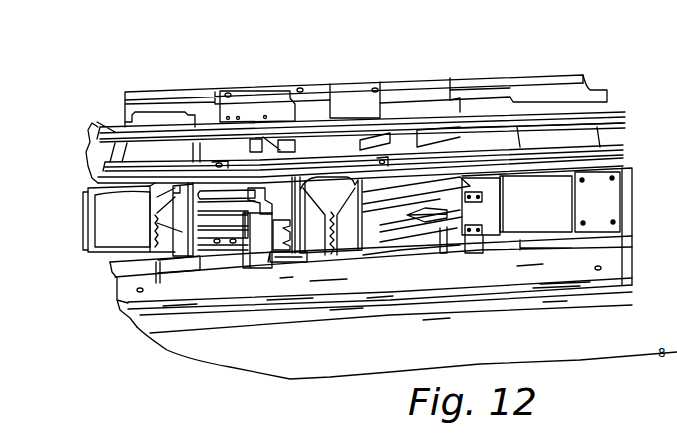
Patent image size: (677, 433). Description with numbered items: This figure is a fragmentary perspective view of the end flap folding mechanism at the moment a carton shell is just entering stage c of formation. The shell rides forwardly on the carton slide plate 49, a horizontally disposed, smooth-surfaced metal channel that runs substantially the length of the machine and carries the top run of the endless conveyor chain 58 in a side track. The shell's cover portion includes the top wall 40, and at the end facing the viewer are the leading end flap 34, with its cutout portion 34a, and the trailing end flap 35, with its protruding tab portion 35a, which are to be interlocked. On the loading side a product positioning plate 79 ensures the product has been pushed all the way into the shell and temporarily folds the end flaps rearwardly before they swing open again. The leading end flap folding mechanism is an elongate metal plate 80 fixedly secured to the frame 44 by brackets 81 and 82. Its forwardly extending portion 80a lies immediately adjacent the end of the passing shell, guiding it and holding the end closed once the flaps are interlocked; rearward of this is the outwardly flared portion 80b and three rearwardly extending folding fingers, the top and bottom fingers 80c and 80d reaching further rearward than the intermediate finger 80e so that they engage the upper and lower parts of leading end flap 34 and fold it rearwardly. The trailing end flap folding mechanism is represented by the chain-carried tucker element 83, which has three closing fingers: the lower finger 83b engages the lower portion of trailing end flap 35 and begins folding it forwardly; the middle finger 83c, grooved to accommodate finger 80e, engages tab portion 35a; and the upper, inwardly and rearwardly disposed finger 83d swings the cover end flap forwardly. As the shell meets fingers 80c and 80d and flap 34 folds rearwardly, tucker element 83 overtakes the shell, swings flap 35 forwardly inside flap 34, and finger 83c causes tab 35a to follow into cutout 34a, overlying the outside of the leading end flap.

The leading end flap 34 is at (183, 247).
The cutout portion 34a is at (175, 235).
The trailing end flap 35 is at (87, 253).
The tab portion 35a is at (66, 224).
The top wall 40 is at (355, 147).
The frame 44 is at (582, 345).
The carton slide plate 49 is at (217, 228).
The endless conveyor chain 58 is at (214, 240).
The product positioning plate 79 is at (147, 225).
The elongate metal plate 80 is at (457, 224).
The forwardly extending portion 80a is at (556, 209).
The rearwardly outwardly flared portion 80b is at (442, 230).
The top folding finger 80c is at (403, 200).
The bottom folding finger 80d is at (383, 245).
The intermediate folding finger 80e is at (423, 220).
The bracket 81 is at (488, 224).
The bracket 82 is at (610, 212).
The tucker element 83 is at (259, 248).
The lower closing finger 83b is at (300, 257).
The middle closing finger 83c is at (280, 222).
The upper closing finger 83d is at (260, 190).